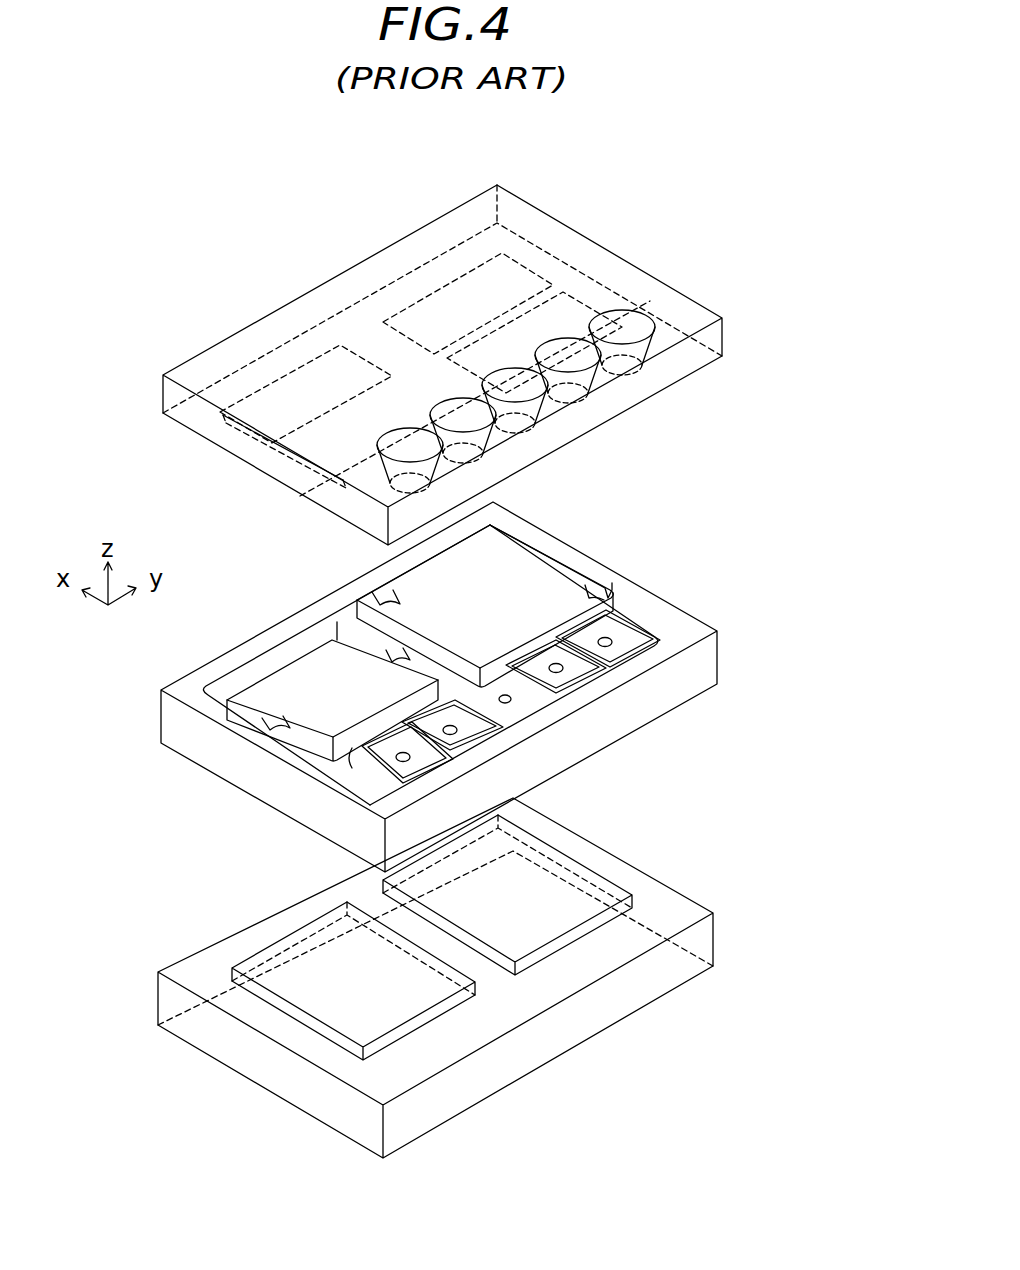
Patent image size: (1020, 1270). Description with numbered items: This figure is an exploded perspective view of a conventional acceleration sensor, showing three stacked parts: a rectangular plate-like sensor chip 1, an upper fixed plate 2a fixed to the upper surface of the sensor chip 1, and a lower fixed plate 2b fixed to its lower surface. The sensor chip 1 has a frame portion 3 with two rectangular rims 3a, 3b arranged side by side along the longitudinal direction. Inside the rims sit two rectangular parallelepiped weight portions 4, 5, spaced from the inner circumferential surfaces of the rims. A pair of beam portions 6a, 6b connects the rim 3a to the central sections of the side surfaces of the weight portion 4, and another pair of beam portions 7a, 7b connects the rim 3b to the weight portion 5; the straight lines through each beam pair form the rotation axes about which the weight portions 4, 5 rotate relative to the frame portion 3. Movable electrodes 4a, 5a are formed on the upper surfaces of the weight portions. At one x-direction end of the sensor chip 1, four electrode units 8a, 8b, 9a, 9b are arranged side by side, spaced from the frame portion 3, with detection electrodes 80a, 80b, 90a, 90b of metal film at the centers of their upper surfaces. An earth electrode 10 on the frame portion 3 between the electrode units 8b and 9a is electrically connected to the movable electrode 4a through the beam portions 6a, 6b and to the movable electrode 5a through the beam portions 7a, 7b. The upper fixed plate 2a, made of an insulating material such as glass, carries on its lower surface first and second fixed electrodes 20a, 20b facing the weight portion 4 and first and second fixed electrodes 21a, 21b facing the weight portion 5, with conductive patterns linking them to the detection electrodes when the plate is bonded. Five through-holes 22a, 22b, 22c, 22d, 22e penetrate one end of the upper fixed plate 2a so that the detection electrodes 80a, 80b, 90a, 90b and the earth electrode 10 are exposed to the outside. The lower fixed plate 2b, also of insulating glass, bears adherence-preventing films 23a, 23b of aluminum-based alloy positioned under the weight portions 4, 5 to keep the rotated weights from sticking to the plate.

The sensor chip 1 is at (694, 600).
The upper fixed plate 2a is at (724, 333).
The lower fixed plate 2b is at (715, 942).
The frame portion 3 is at (175, 713).
The rim 3a is at (278, 655).
The rim 3b is at (612, 598).
The weight portion 4 is at (277, 680).
The movable electrode 4a is at (273, 693).
The weight portion 5 is at (612, 592).
The movable electrode 5a is at (460, 588).
The beam portion 6a is at (268, 724).
The beam portion 6b is at (398, 658).
The beam portion 7a is at (385, 598).
The beam portion 7b is at (563, 592).
The electrode unit 8a is at (385, 771).
The electrode unit 8b is at (468, 762).
The electrode unit 9a is at (588, 673).
The electrode unit 9b is at (637, 637).
The earth electrode 10 is at (509, 702).
The detection electrode 80a is at (398, 760).
The detection electrode 80b is at (456, 735).
The detection electrode 90a is at (563, 670).
The detection electrode 90b is at (612, 644).
The first fixed electrode 20a is at (279, 382).
The second fixed electrode 20b is at (283, 470).
The first fixed electrode 21a is at (443, 287).
The second fixed electrode 21b is at (577, 300).
The through-hole 22a is at (468, 462).
The through-hole 22b is at (500, 425).
The through-hole 22c is at (598, 368).
The through-hole 22d is at (648, 340).
The through-hole 22e is at (552, 395).
The adherence-preventing film 23a is at (423, 1033).
The adherence-preventing film 23b is at (570, 947).